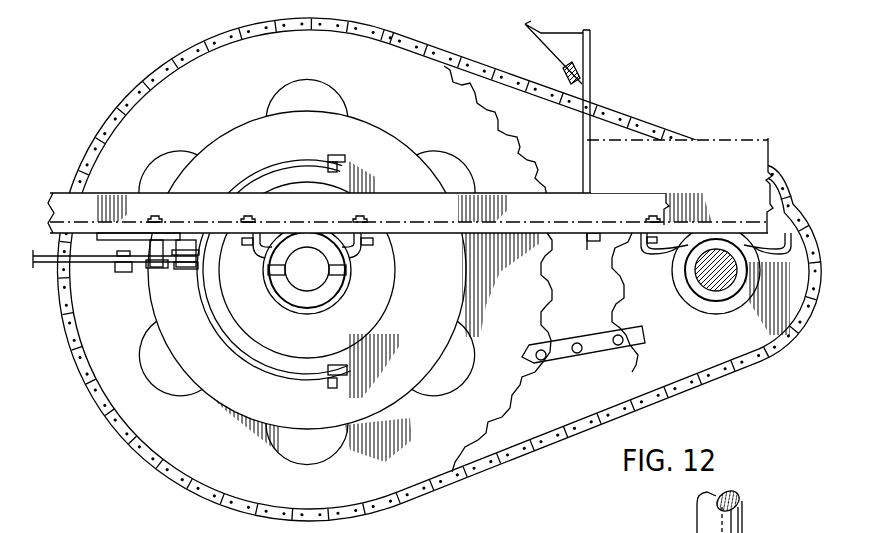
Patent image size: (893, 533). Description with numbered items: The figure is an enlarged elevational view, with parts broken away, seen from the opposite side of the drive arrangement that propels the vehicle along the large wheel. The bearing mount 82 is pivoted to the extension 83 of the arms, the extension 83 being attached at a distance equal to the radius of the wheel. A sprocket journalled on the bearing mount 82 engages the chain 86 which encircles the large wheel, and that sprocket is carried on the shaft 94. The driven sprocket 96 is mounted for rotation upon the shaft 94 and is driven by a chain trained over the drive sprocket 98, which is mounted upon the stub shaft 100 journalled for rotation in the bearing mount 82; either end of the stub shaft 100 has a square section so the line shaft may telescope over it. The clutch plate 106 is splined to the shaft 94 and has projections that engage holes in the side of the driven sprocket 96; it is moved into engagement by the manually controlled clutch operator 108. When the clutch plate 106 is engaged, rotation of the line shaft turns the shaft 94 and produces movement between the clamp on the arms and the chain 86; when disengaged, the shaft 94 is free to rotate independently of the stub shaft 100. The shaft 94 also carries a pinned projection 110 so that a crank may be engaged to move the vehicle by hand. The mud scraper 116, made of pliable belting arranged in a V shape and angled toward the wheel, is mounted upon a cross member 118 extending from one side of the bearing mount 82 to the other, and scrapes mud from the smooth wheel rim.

The bearing mount 82 is at (516, 196).
The extension 83 is at (717, 166).
The chain 86 is at (598, 340).
The shaft 94 is at (318, 282).
The driven sprocket 96 is at (184, 441).
The drive sprocket 98 is at (760, 354).
The stub shaft 100 is at (707, 280).
The clutch plate 106 is at (431, 321).
The clutch operator 108 is at (139, 285).
The pinned projection 110 is at (352, 272).
The mud scraper 116 is at (530, 40).
The cross member 118 is at (600, 256).